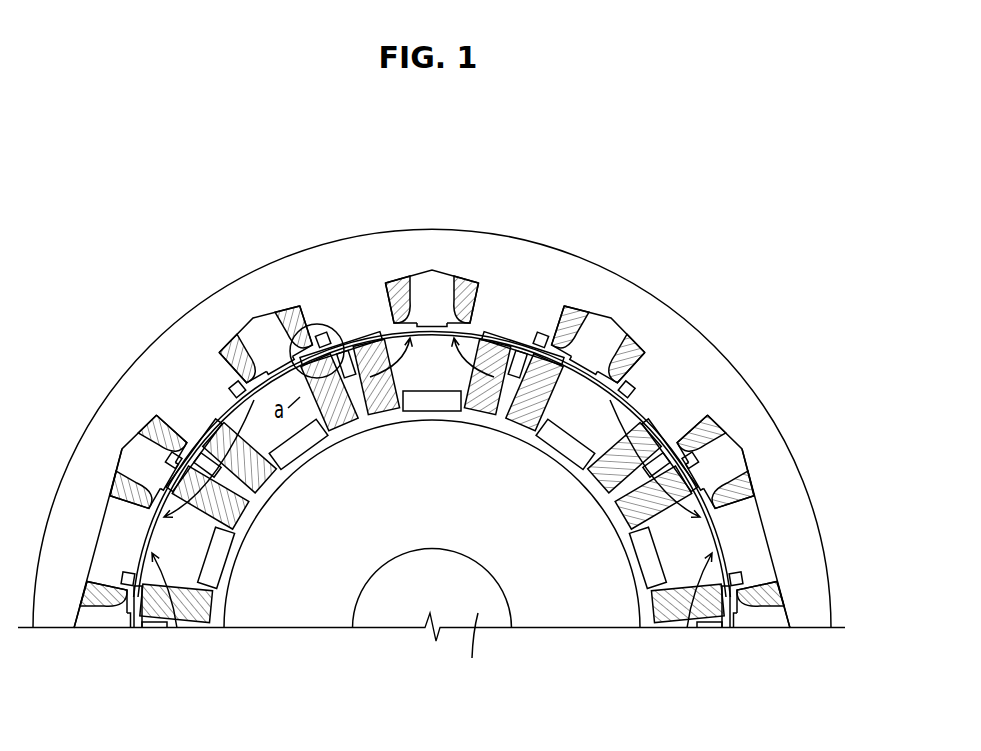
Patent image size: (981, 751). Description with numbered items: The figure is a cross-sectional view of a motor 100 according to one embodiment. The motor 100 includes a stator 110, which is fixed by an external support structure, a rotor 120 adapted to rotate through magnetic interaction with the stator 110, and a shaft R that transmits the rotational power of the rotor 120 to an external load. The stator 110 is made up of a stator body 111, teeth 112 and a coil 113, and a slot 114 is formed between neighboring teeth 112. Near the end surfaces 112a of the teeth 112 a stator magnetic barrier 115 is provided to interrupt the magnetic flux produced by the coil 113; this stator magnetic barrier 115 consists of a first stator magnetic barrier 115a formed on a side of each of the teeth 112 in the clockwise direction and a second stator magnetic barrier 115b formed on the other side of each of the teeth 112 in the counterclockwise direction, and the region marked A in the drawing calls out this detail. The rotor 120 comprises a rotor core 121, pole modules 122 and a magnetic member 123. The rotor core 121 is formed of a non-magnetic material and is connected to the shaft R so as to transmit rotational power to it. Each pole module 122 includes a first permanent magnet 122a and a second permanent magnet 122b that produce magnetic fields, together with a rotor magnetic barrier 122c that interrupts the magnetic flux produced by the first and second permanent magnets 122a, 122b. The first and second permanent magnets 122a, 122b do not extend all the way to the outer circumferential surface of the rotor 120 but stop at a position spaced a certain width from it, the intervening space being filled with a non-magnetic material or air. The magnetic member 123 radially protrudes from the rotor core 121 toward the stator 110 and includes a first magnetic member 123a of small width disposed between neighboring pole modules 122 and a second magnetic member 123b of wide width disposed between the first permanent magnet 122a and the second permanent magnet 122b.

The motor 100 is at (661, 154).
The stator 110 is at (90, 633).
The stator body 111 is at (523, 283).
The teeth 112 is at (350, 325).
The end surfaces 112a is at (217, 425).
The coil 113 is at (395, 282).
The slot 114 is at (436, 296).
The stator magnetic barrier 115 is at (135, 266).
The first stator magnetic barrier 115a is at (232, 380).
The second stator magnetic barrier 115b is at (318, 332).
The rotor 120 is at (157, 633).
The rotor core 121 is at (252, 628).
The pole module 122 is at (352, 503).
The first permanent magnet 122a is at (262, 465).
The second permanent magnet 122b is at (374, 408).
The rotor magnetic barrier 122c is at (305, 452).
The magnetic member 123 is at (540, 472).
The first magnetic member 123a is at (505, 405).
The second magnetic member 123b is at (588, 412).
The detail region A is at (296, 340).
The shaft R is at (472, 647).